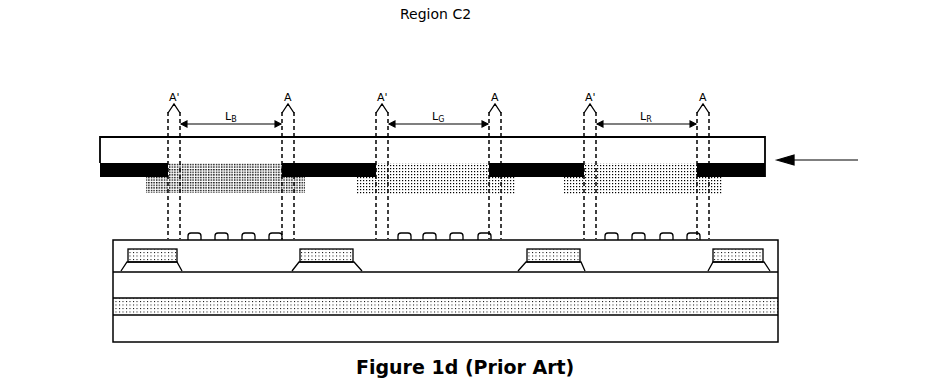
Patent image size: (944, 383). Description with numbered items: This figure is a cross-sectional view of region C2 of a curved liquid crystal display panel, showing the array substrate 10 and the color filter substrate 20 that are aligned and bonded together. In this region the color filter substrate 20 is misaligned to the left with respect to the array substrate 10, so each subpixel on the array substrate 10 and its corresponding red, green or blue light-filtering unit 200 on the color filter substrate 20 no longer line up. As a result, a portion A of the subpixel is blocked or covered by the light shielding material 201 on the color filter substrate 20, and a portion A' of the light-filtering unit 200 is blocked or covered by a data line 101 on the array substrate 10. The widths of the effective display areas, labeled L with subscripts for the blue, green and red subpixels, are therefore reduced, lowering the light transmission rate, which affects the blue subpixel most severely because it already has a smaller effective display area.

The color filter substrate 20 is at (88, 138).
The light shielding material 201 is at (145, 163).
The light-filtering unit 200 is at (145, 180).
The array substrate 10 is at (100, 234).
The data line 101 is at (135, 250).